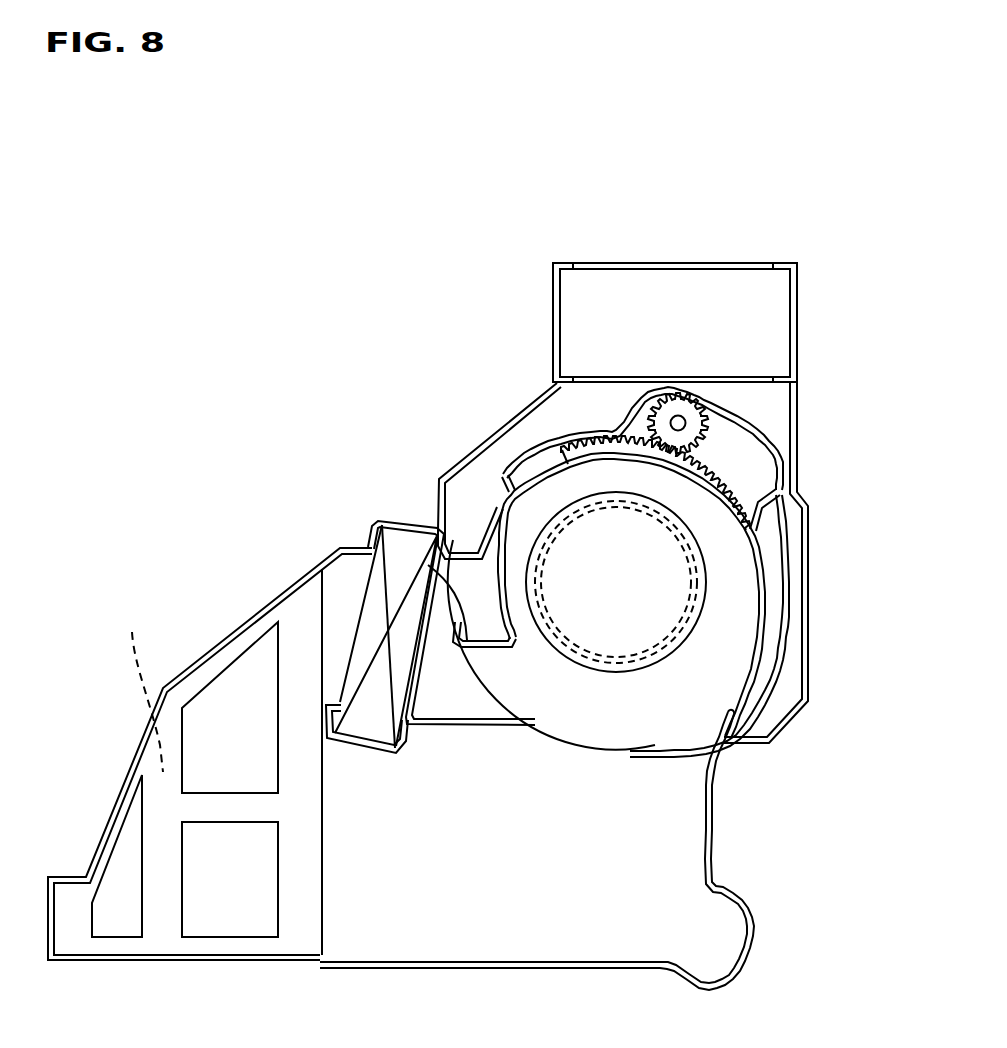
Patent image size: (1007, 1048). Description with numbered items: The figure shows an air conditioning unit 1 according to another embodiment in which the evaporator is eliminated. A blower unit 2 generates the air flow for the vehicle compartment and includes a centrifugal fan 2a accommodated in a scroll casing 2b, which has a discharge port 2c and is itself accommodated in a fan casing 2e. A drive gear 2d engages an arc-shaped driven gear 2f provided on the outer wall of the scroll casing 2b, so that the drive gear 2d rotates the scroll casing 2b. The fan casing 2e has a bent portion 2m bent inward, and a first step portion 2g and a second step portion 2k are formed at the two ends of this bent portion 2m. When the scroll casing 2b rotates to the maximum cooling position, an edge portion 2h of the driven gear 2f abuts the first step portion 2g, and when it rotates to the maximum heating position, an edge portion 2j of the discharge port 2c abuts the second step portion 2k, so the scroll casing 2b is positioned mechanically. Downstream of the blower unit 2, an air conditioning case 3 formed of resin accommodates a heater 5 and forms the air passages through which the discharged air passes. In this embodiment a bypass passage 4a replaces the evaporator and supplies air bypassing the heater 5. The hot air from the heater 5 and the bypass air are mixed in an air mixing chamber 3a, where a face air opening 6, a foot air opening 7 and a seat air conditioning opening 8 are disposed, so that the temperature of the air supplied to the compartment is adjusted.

The air conditioning unit 1 is at (801, 289).
The blower unit 2 is at (780, 530).
The fan 2a is at (698, 604).
The scroll casing 2b is at (742, 683).
The discharge port 2c is at (566, 721).
The drive gear 2d is at (688, 420).
The fan casing 2e is at (514, 470).
The driven gear 2f is at (724, 493).
The first step portion 2g is at (497, 488).
The edge portion of the driven gear 2h is at (567, 470).
The edge portion of the discharge port 2j is at (397, 577).
The second step portion 2k is at (448, 548).
The bent portion 2m is at (450, 558).
The air conditioning case 3 is at (333, 560).
The air mixing chamber 3a is at (140, 686).
The bypass passage 4a is at (527, 864).
The heater 5 is at (370, 547).
The face air opening 6 is at (238, 909).
The foot air opening 7 is at (225, 700).
The seat air conditioning opening 8 is at (117, 909).